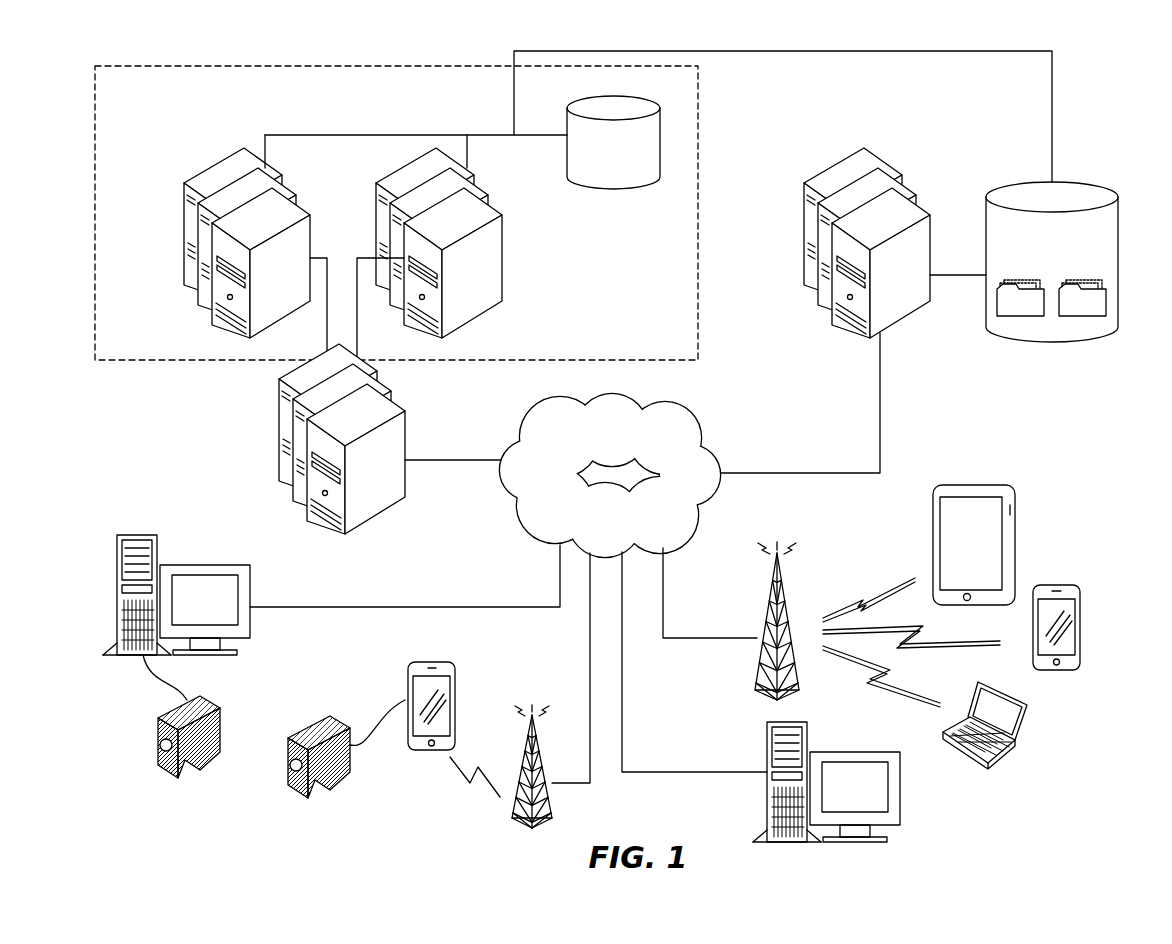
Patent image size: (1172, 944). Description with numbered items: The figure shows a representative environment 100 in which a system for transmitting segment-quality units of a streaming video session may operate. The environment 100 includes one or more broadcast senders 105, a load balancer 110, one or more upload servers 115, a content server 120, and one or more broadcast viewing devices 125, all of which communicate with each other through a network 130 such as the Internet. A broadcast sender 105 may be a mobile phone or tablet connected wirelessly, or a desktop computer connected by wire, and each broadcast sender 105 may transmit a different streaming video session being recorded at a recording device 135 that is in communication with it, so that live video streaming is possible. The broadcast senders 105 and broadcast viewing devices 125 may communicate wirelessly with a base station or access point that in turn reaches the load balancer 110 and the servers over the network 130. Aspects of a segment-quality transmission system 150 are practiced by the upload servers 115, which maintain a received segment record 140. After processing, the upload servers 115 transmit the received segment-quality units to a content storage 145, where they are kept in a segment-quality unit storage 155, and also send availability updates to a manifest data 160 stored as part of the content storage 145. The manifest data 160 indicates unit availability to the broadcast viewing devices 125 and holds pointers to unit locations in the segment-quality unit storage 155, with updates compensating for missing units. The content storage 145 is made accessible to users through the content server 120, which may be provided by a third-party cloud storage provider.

The environment 100 is at (1113, 107).
The broadcast sender 105 is at (187, 565).
The load balancer 110 is at (279, 400).
The upload server 115 is at (182, 187).
The content server 120 is at (834, 166).
The broadcast viewing device 125 is at (933, 540).
The network 130 is at (690, 407).
The recording device 135 is at (177, 777).
The received segment record 140 is at (590, 100).
The content storage 145 is at (1090, 183).
The segment-quality transmission system 150 is at (352, 66).
The segment-quality unit storage 155 is at (1022, 308).
The manifest data 160 is at (1092, 308).